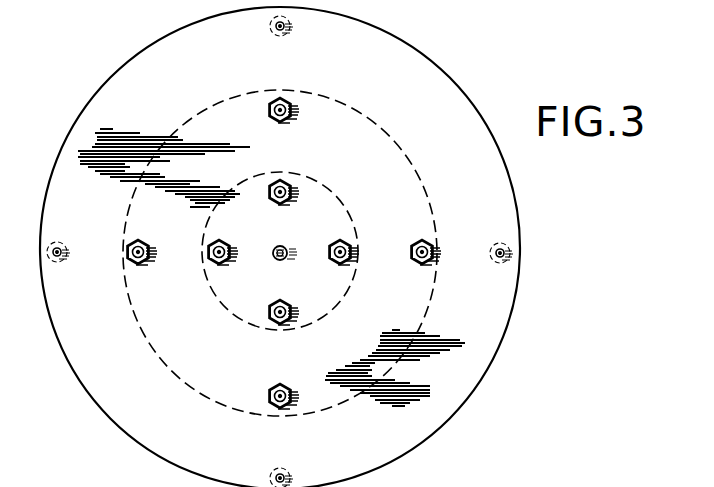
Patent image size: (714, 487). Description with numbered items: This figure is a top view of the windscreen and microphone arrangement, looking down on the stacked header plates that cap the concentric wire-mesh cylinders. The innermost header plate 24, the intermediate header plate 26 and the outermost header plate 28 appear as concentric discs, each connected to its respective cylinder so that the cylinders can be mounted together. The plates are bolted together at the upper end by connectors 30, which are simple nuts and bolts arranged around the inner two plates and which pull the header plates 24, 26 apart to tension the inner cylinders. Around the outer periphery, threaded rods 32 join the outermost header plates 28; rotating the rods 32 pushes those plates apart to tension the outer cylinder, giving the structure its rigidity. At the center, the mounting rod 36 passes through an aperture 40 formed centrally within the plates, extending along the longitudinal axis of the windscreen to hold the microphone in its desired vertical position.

The header plate 24 is at (316, 176).
The header plate 26 is at (368, 108).
The header plate 28 is at (408, 61).
The connectors 30 is at (289, 121).
The threaded rods 32 is at (271, 33).
The mounting rod 36 is at (292, 264).
The aperture 40 is at (272, 262).